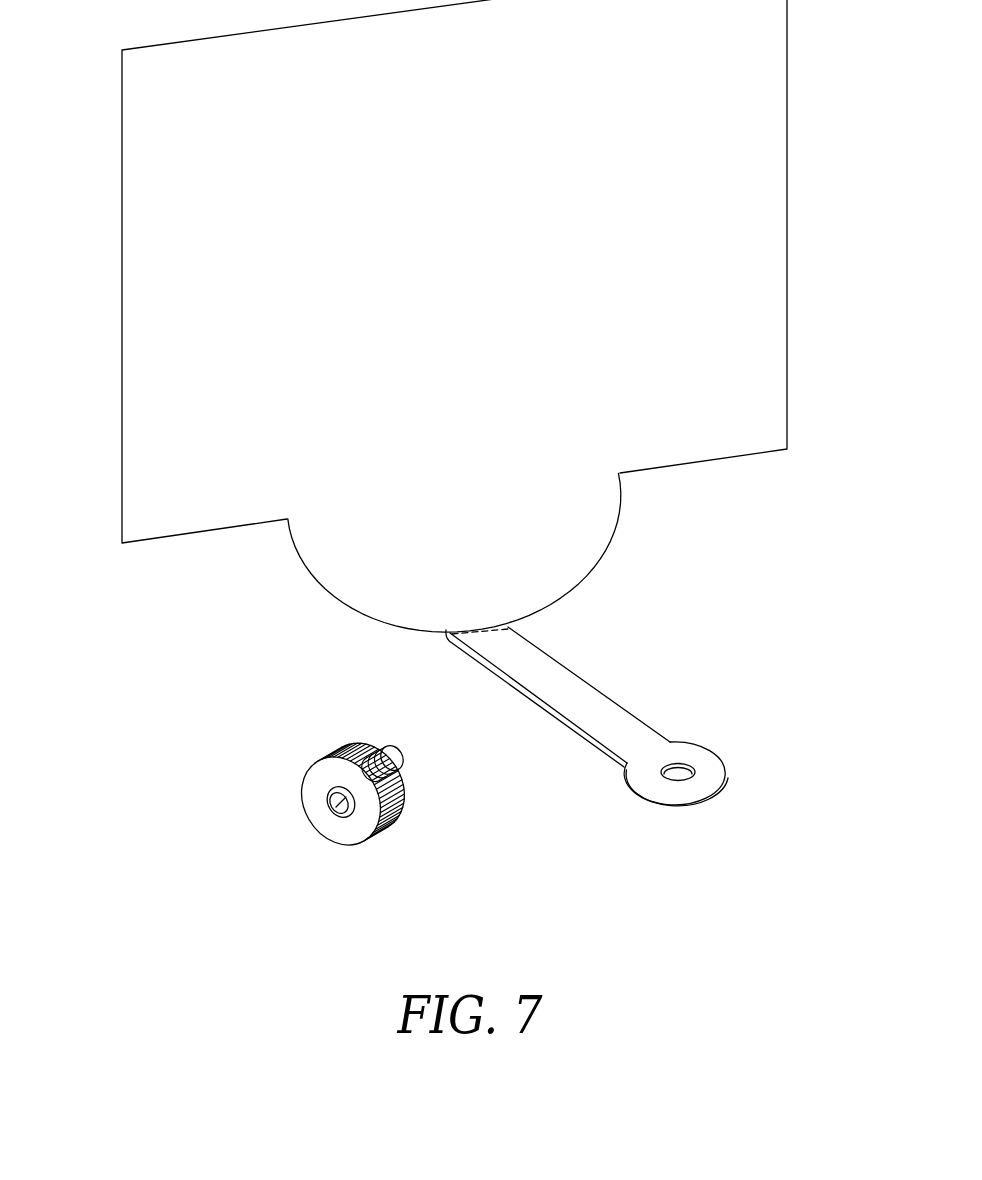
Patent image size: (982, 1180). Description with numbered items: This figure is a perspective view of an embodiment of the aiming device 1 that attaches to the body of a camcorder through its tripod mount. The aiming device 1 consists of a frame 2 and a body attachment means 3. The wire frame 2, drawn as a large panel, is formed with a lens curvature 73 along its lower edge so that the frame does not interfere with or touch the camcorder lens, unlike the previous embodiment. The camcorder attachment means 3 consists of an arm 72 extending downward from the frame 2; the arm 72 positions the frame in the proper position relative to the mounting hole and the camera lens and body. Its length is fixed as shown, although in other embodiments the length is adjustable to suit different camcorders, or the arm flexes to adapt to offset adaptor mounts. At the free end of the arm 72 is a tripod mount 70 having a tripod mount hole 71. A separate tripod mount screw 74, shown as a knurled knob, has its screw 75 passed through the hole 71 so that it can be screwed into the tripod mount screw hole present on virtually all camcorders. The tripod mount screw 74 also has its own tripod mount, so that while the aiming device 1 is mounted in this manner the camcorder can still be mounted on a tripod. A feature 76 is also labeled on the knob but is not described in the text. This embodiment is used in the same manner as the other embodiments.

The aiming device 1 is at (474, 316).
The frame 2 is at (440, 316).
The body attachment means 3 is at (598, 741).
The tripod mount 70 is at (686, 788).
The tripod mount hole 71 is at (678, 778).
The arm 72 is at (547, 666).
The lens curvature 73 is at (323, 588).
The tripod mount screw 74 is at (347, 791).
The screw 75 is at (379, 751).
The knob bore 76 is at (334, 802).